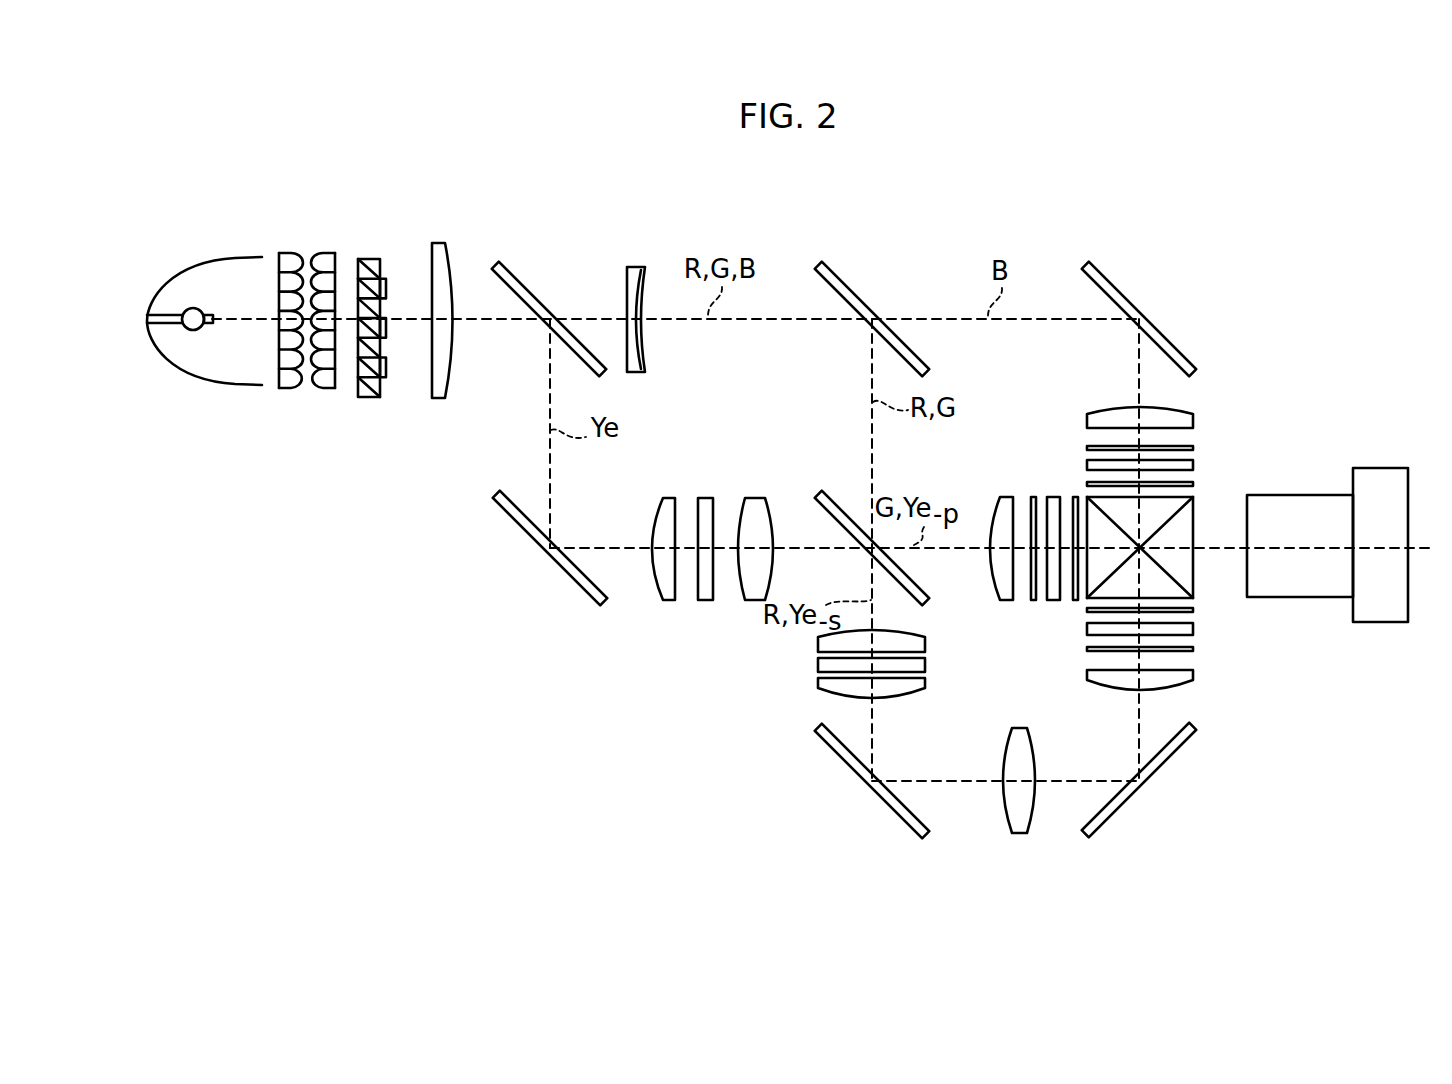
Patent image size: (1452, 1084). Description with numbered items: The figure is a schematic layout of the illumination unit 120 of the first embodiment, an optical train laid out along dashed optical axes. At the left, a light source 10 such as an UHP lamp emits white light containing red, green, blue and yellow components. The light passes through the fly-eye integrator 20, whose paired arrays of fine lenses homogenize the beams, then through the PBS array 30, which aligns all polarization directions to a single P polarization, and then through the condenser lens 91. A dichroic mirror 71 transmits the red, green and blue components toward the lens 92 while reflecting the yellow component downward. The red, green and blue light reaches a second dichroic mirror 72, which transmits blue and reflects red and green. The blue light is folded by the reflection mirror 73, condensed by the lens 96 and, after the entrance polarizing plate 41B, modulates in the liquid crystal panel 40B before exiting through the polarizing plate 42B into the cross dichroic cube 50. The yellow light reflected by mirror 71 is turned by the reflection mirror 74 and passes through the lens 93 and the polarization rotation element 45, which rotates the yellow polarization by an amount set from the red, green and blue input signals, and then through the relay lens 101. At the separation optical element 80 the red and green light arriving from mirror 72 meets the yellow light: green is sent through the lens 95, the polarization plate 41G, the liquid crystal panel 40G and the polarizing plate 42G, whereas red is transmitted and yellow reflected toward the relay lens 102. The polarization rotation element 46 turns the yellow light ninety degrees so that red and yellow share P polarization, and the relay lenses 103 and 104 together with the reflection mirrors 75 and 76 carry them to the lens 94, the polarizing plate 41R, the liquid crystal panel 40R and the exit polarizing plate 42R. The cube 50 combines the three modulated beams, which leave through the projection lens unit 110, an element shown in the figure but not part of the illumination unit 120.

The light source 10 is at (258, 257).
The fly-eye integrator 20 is at (337, 245).
The PBS array 30 is at (369, 261).
The lens 91 is at (437, 250).
The mirror 71 is at (506, 273).
The lens 92 is at (636, 276).
The mirror 72 is at (828, 273).
The mirror 73 is at (1094, 272).
The mirror 74 is at (568, 575).
The lens 93 is at (671, 600).
The polarization rotation element 45 is at (705, 500).
The lens 101 is at (755, 500).
The separation optical element 80 is at (831, 500).
The lens 95 is at (994, 511).
The polarization plate 41G is at (1033, 505).
The liquid crystal panel 40G is at (1054, 503).
The polarizing plate 42G is at (1075, 503).
The cross dichroic cube 50 is at (1196, 510).
The lens 96 is at (1181, 412).
The polarizing plate 41B is at (1196, 426).
The liquid crystal panel 40B is at (1196, 448).
The polarizing plate 42B is at (1196, 483).
The projection lens unit 110 is at (1380, 476).
The polarizing plate 42R is at (1196, 606).
The liquid crystal panel 40R is at (1196, 630).
The polarizing plate 41R is at (1196, 650).
The lens 94 is at (1184, 681).
The mirror 76 is at (1164, 760).
The lens 102 is at (921, 642).
The polarization rotation element 46 is at (921, 665).
The lens 103 is at (921, 685).
The mirror 75 is at (890, 805).
The lens 104 is at (1027, 828).
The illumination unit 120 is at (1390, 792).